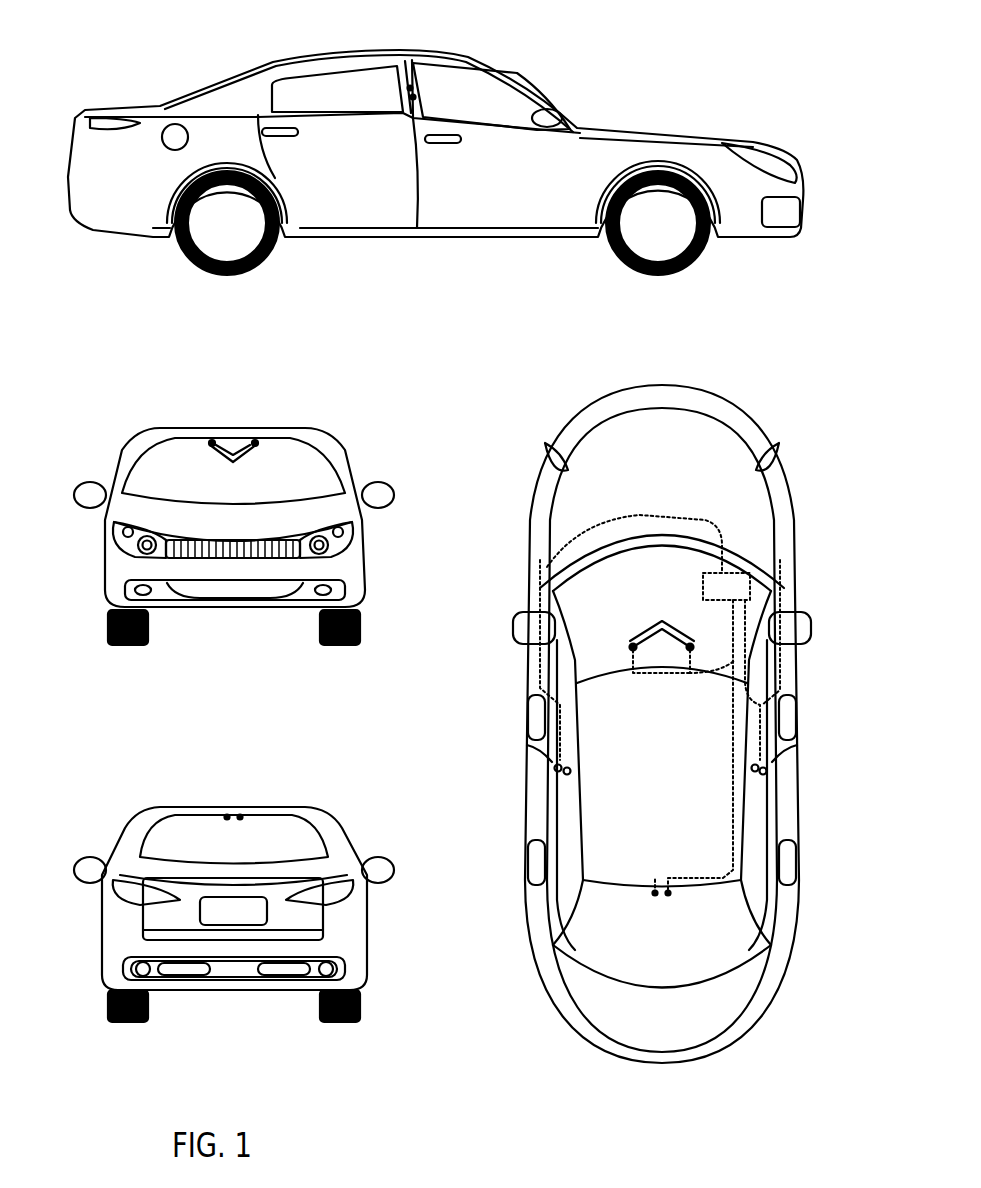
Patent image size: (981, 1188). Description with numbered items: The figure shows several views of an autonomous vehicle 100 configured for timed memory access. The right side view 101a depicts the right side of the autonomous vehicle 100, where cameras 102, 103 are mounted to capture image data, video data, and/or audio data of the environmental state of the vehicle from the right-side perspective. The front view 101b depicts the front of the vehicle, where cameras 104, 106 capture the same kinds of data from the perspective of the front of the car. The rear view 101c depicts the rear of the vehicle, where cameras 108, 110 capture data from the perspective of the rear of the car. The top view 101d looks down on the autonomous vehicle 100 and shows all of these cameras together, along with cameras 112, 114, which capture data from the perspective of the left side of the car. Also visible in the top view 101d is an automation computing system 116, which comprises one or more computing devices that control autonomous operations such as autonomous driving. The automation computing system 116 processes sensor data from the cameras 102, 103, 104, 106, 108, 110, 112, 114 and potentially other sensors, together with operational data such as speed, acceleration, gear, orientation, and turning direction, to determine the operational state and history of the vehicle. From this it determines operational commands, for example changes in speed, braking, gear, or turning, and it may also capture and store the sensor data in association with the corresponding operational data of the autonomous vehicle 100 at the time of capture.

The autonomous vehicle 100 is at (700, 140).
The right side view 101a is at (674, 73).
The front view 101b is at (370, 416).
The rear view 101c is at (338, 800).
The top view 101d is at (812, 461).
The camera 102 is at (415, 97).
The camera 103 is at (412, 88).
The camera 104 is at (212, 443).
The camera 106 is at (255, 443).
The camera 108 is at (227, 815).
The camera 110 is at (241, 815).
The camera 112 is at (558, 772).
The camera 114 is at (567, 775).
The automation computing system 116 is at (735, 573).